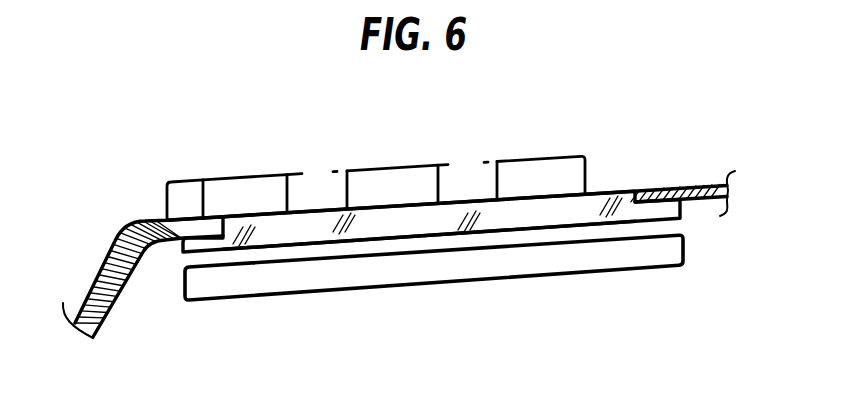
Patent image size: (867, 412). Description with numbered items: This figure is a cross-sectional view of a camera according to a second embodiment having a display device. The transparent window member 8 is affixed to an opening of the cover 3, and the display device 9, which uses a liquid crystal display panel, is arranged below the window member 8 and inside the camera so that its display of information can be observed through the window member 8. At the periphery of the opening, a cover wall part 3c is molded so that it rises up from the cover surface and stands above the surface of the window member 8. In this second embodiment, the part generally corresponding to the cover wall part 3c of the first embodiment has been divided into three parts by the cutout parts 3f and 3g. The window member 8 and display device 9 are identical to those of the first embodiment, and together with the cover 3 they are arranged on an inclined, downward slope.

The cover 3 is at (672, 189).
The cover wall part 3c is at (232, 194).
The cutout part 3f is at (305, 184).
The cutout part 3g is at (464, 181).
The transparent window member 8 is at (600, 200).
The display device 9 is at (447, 268).